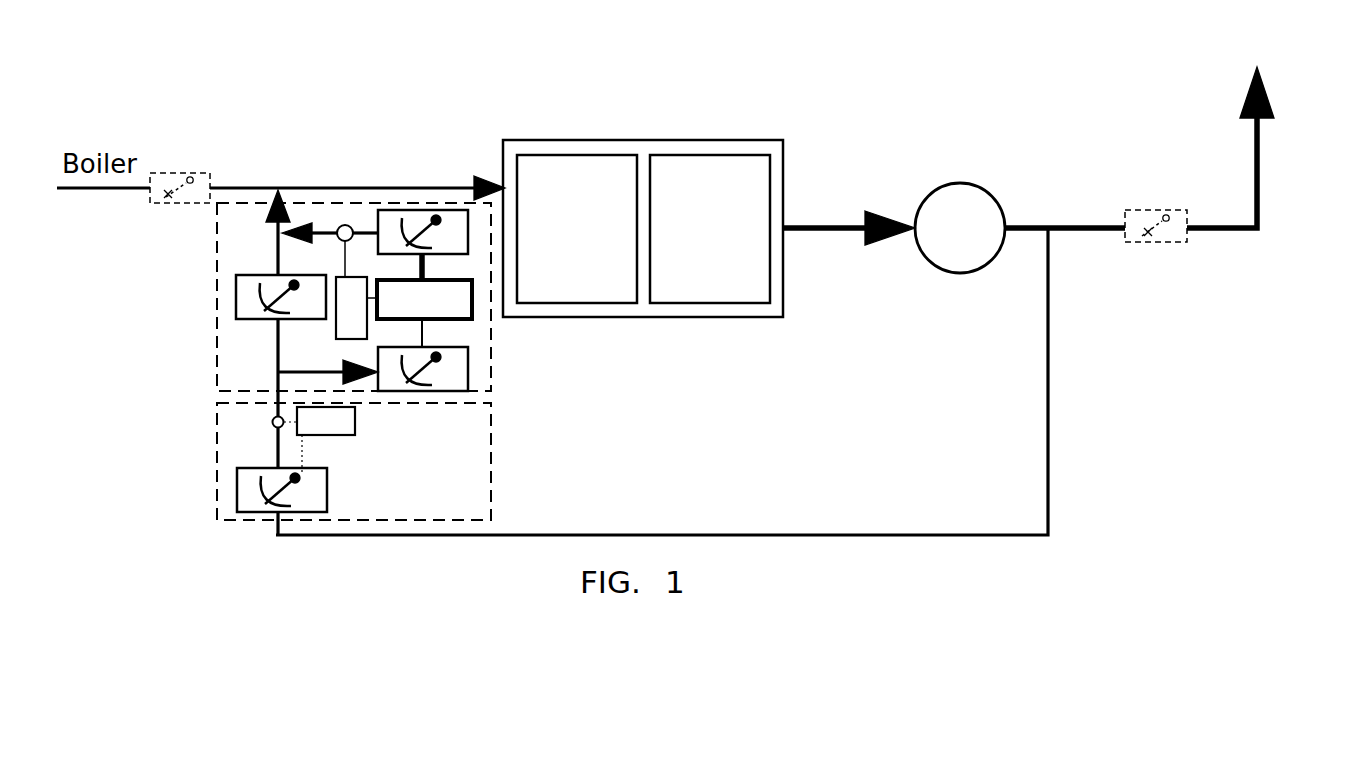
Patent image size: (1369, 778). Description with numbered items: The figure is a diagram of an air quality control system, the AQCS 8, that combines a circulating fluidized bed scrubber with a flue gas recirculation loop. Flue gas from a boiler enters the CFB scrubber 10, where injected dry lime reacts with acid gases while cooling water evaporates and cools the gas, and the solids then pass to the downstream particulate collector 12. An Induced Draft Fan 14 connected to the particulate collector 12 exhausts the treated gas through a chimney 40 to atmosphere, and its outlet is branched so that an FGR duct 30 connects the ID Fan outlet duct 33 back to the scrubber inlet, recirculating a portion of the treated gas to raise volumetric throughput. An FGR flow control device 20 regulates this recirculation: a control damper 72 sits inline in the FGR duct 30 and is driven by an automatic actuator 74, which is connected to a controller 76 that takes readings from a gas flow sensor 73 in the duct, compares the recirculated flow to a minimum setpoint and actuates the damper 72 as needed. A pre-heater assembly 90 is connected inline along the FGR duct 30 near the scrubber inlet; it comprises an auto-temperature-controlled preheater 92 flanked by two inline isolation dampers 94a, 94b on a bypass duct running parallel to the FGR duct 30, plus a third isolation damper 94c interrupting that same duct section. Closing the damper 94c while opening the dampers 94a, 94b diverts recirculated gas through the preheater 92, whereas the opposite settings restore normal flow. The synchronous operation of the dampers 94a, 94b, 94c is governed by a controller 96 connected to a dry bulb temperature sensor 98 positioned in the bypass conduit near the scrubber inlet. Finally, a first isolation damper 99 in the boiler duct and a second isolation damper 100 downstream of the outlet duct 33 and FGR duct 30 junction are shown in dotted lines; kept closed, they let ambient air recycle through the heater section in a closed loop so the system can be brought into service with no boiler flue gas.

The AQCS 8 is at (407, 98).
The CFB scrubber 10 is at (577, 229).
The particulate collector 12 is at (710, 229).
The Induced Draft Fan 14 is at (937, 178).
The FGR flow control device 20 is at (354, 461).
The FGR duct 30 is at (622, 533).
The ID Fan outlet duct 33 is at (1029, 213).
The chimney 40 is at (1275, 152).
The FGR damper 72 is at (262, 507).
The gas flow sensor 73 is at (272, 427).
The automatic actuator 74 is at (268, 522).
The controller 76 is at (319, 440).
The pre-heater assembly 90 is at (354, 297).
The preheater 92 is at (405, 278).
The isolation damper 94a is at (468, 255).
The isolation damper 94b is at (469, 378).
The third isolation damper 94c is at (281, 309).
The controller 96 is at (356, 290).
The temperature sensor 98 is at (346, 224).
The first isolation damper 99 is at (200, 172).
The second isolation damper 100 is at (1177, 209).